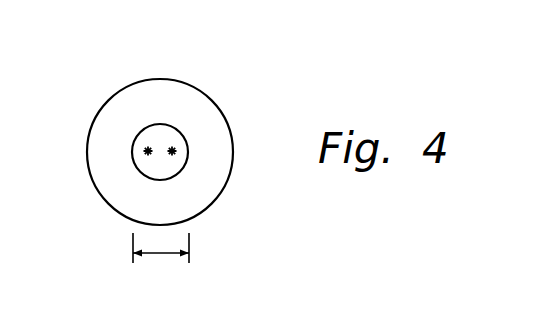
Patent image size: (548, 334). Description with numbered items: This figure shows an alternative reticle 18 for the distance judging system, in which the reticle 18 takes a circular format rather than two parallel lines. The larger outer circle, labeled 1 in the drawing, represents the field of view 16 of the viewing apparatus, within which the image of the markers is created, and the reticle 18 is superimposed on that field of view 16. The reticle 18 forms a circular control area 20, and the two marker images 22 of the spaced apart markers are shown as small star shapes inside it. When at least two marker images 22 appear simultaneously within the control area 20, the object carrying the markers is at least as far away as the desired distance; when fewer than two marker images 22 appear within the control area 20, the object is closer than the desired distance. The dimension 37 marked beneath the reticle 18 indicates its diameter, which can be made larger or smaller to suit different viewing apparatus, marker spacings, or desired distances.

The sensor device 1 is at (140, 100).
The field of view 16 is at (200, 115).
The reticle 18 is at (187, 142).
The control area 20 is at (166, 124).
The marker images 22 is at (170, 153).
The width dimension 37 is at (162, 253).